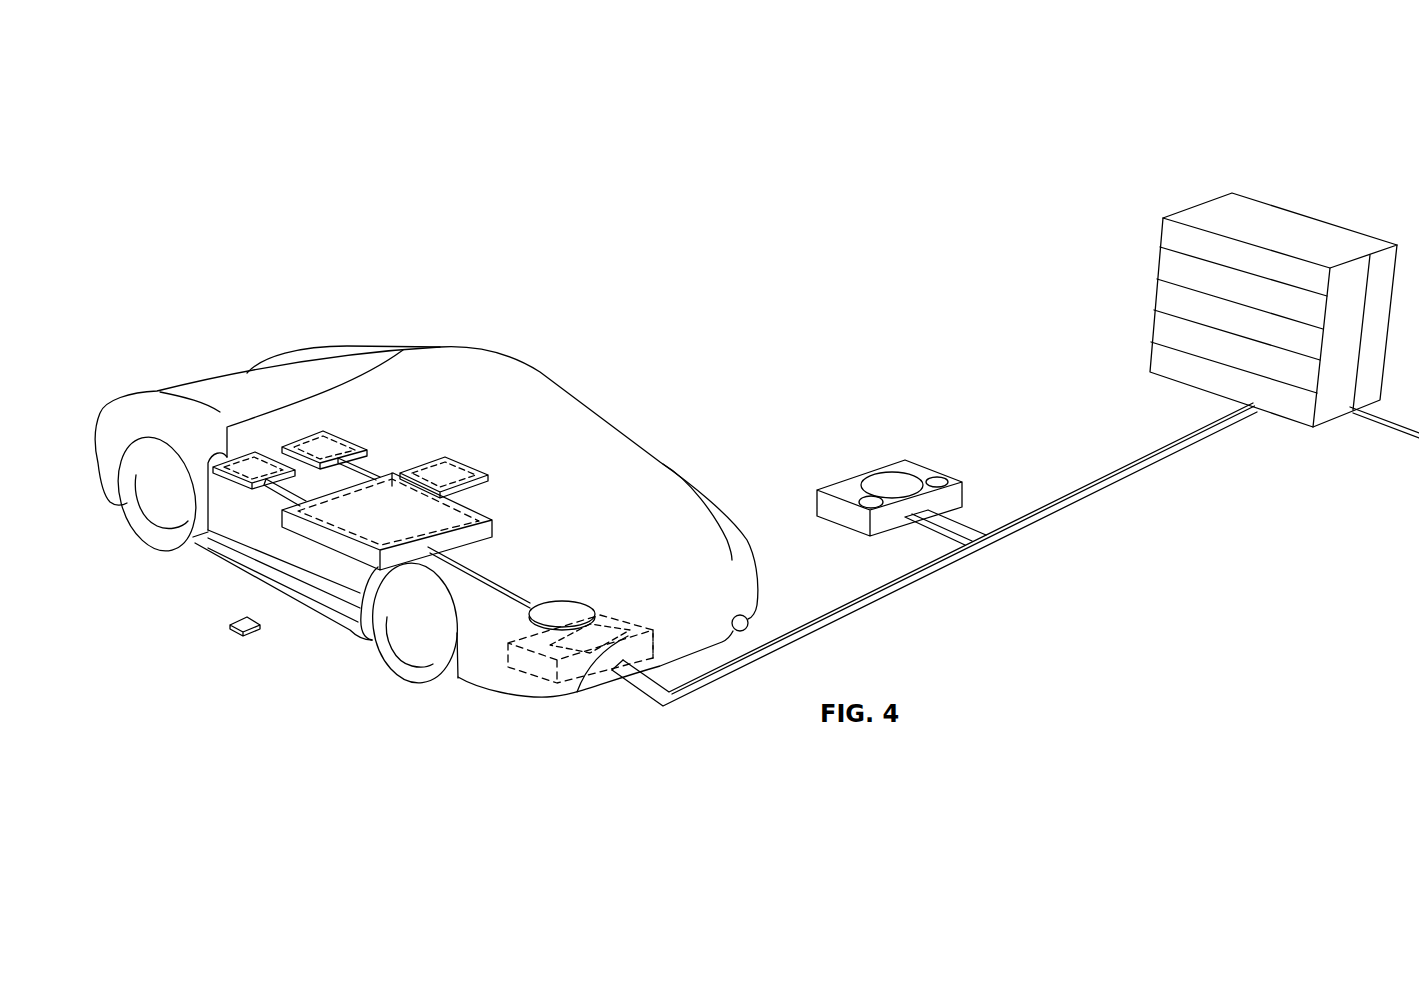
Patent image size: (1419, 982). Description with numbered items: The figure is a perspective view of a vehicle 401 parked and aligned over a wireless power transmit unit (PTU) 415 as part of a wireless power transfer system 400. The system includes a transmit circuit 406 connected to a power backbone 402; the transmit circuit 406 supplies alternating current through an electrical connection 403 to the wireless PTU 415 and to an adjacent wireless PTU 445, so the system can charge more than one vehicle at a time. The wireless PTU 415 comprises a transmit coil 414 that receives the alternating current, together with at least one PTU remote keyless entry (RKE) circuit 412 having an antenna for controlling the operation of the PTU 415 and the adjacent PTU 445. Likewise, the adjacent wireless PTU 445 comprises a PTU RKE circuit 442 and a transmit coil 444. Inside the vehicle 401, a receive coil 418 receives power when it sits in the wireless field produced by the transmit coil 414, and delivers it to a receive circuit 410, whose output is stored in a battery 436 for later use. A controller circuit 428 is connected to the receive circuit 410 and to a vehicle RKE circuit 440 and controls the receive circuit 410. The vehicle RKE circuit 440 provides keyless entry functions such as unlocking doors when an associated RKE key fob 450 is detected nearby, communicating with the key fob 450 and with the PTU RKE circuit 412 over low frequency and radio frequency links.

The wireless power transfer system 400 is at (616, 106).
The vehicle 401 is at (215, 368).
The power backbone 402 is at (1412, 433).
The electrical connection 403 is at (1152, 468).
The transmit circuit 406 is at (1198, 212).
The receive circuit 410 is at (406, 540).
The PTU remote keyless entry (RKE) circuit 412 is at (557, 662).
The transmit coil 414 is at (613, 633).
The wireless power transmit unit (PTU) 415 is at (655, 645).
The receive coil 418 is at (560, 606).
The controller circuit 428 is at (327, 432).
The battery 436 is at (223, 478).
The vehicle RKE circuit 440 is at (443, 455).
The PTU RKE circuit 442 is at (962, 507).
The transmit coil 444 is at (918, 472).
The adjacent wireless PTU 445 is at (853, 485).
The RKE key fob 450 is at (245, 634).